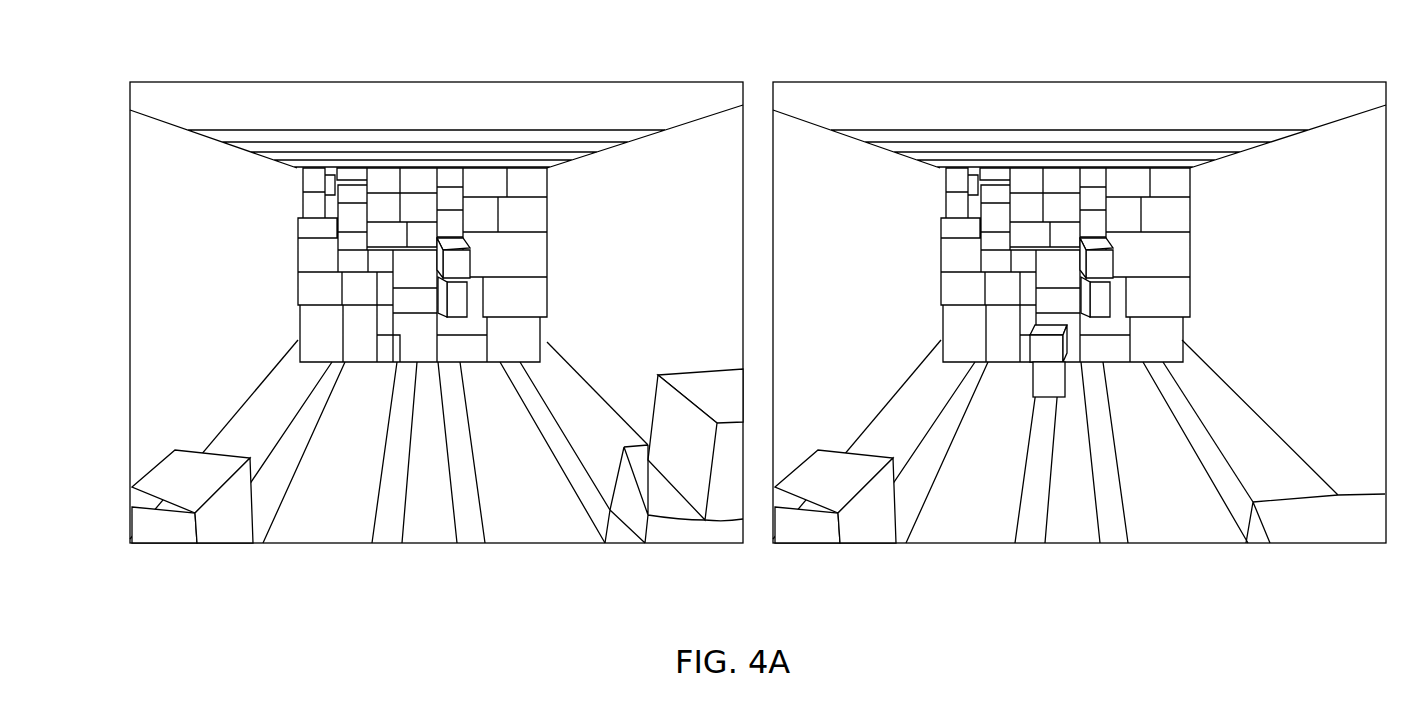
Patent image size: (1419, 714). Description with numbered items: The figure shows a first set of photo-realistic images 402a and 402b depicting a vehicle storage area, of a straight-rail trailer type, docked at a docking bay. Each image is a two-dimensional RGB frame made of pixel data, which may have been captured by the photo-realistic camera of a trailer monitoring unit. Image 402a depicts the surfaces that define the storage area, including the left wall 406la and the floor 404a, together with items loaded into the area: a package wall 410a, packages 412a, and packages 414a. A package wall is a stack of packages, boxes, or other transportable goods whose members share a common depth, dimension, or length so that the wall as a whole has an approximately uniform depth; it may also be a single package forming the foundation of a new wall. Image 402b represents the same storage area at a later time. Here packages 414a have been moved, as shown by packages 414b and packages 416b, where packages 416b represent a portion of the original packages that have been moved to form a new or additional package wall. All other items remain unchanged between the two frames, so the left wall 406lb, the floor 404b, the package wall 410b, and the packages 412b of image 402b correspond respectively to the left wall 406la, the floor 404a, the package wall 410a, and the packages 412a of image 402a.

The photo-realistic image 402a is at (360, 101).
The photo-realistic image 402b is at (1010, 101).
The floor 404a is at (385, 520).
The floor 404b is at (1028, 520).
The left wall 406la is at (190, 300).
The left wall 406lb is at (828, 188).
The package wall 410a is at (525, 243).
The package wall 410b is at (1168, 252).
The packages 412a is at (167, 530).
The packages 412b is at (813, 532).
The packages 414a is at (680, 530).
The packages 414b is at (1323, 530).
The packages 416b is at (1038, 387).